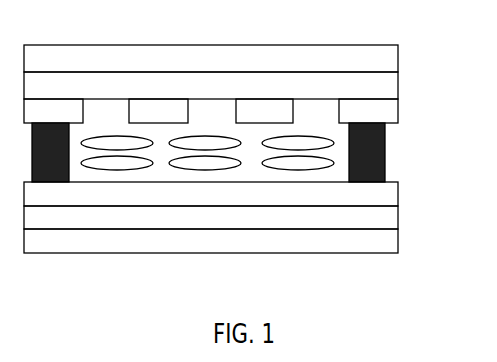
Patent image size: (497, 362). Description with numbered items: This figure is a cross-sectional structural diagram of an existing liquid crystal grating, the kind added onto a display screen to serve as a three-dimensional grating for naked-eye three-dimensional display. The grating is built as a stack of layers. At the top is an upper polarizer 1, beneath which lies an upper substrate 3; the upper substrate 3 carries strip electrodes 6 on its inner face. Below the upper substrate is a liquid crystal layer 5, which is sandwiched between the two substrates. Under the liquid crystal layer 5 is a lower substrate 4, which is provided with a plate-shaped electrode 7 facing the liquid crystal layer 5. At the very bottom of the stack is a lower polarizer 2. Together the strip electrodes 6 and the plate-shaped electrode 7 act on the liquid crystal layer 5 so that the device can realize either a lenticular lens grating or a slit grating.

The upper polarizer 1 is at (398, 57).
The upper substrate 3 is at (398, 82).
The strip electrodes 6 is at (398, 108).
The liquid crystal layer 5 is at (334, 158).
The plate-shaped electrode 7 is at (398, 195).
The lower substrate 4 is at (398, 219).
The lower polarizer 2 is at (398, 242).